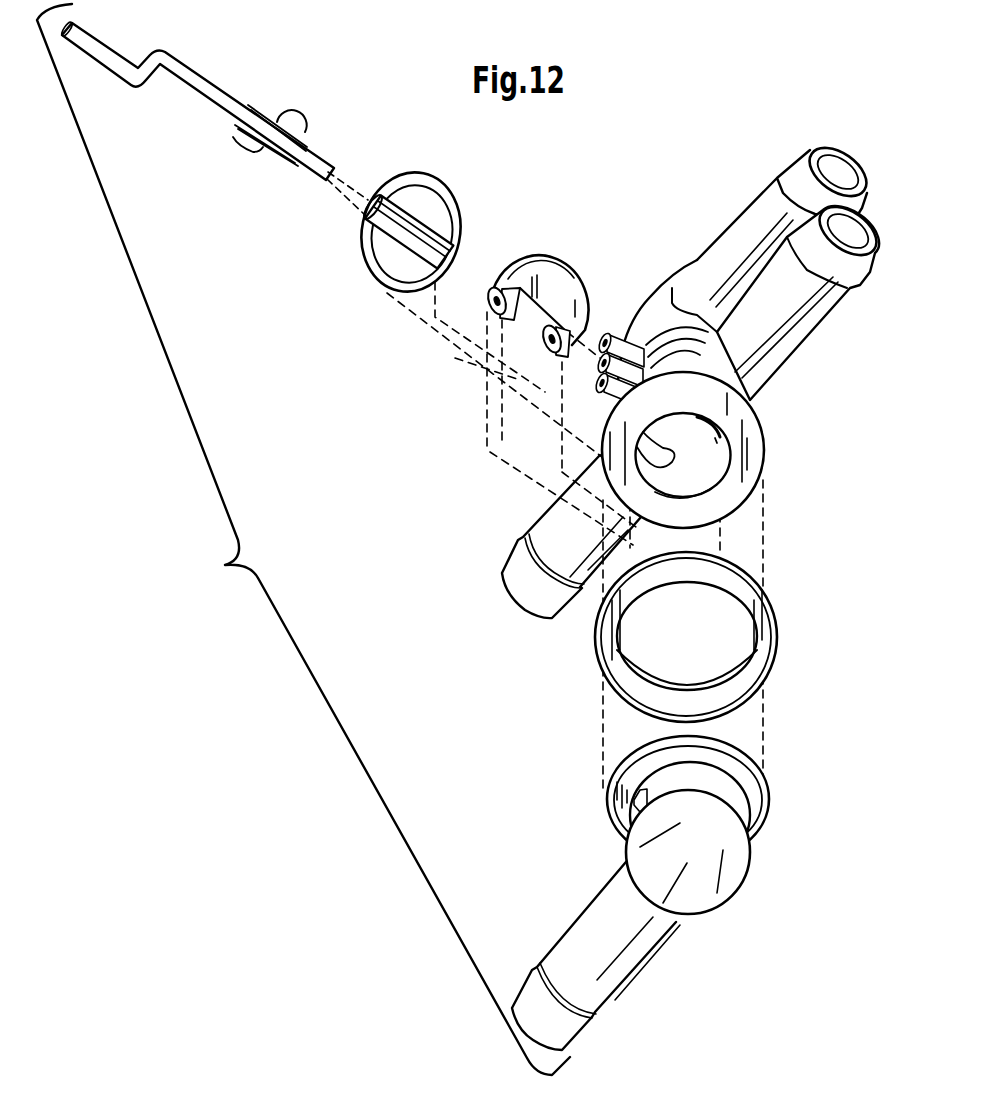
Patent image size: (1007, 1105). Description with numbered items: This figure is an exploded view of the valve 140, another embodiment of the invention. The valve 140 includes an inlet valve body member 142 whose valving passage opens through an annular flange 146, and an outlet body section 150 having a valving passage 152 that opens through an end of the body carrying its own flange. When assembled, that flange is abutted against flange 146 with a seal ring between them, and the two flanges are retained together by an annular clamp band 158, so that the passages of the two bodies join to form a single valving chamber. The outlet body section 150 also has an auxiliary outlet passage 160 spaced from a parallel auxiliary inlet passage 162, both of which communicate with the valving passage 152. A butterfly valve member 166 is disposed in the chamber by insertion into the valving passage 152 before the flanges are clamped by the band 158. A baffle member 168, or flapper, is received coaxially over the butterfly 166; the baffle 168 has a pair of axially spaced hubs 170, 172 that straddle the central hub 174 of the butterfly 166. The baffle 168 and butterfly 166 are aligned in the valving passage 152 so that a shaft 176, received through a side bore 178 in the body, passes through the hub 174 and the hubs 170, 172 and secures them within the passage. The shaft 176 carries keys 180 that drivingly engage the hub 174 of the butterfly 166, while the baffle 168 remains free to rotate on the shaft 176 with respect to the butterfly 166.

The valve 140 is at (303, 539).
The inlet valve body member 142 is at (717, 910).
The annular flange 146 is at (610, 818).
The outlet body section 150 is at (699, 354).
The valving passage 152 is at (705, 490).
The annular clamp band 158 is at (777, 633).
The auxiliary outlet passage 160 is at (838, 300).
The auxiliary inlet passage 162 is at (826, 165).
The butterfly valve member 166 is at (448, 168).
The baffle member 168 is at (573, 270).
The hub 170 is at (508, 322).
The hub 172 is at (547, 360).
The central hub 174 is at (370, 276).
The shaft 176 is at (177, 57).
The side bore 178 is at (602, 330).
The keys 180 is at (263, 152).